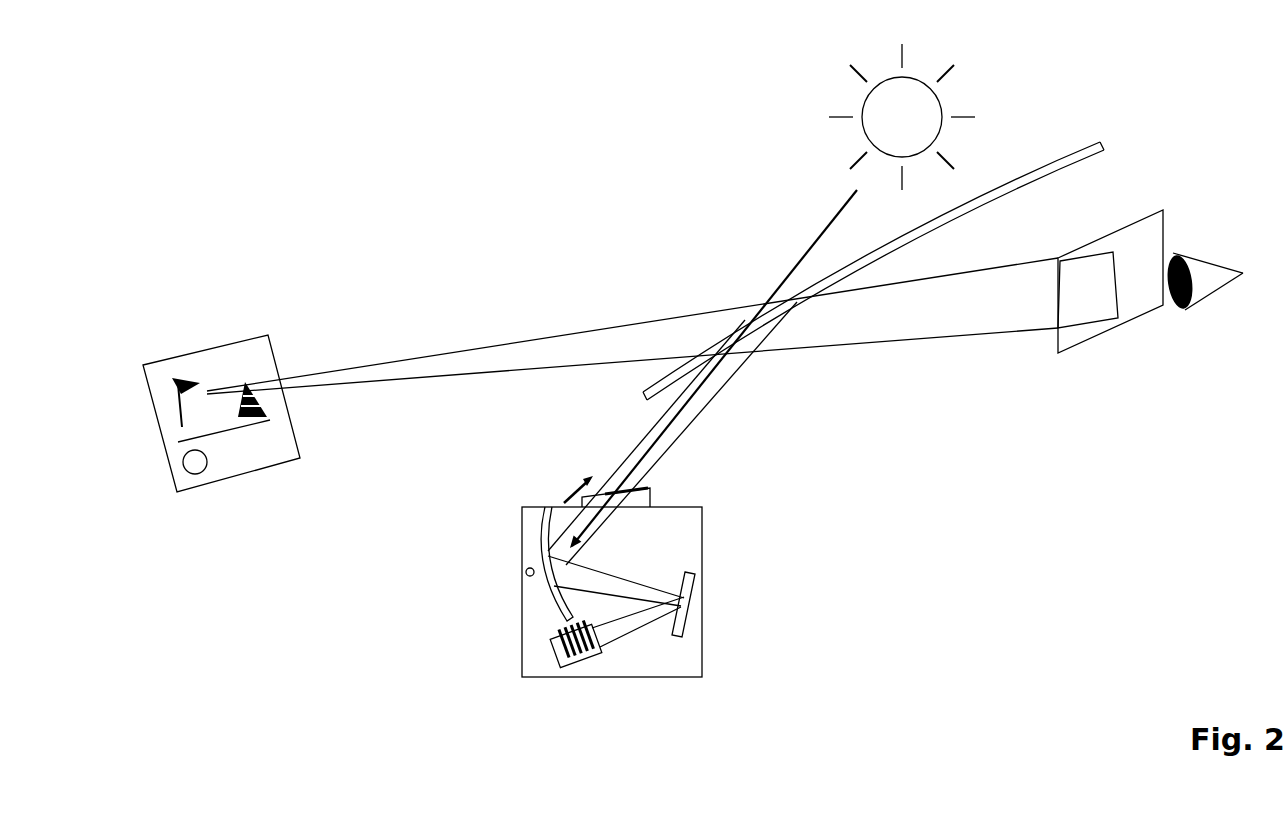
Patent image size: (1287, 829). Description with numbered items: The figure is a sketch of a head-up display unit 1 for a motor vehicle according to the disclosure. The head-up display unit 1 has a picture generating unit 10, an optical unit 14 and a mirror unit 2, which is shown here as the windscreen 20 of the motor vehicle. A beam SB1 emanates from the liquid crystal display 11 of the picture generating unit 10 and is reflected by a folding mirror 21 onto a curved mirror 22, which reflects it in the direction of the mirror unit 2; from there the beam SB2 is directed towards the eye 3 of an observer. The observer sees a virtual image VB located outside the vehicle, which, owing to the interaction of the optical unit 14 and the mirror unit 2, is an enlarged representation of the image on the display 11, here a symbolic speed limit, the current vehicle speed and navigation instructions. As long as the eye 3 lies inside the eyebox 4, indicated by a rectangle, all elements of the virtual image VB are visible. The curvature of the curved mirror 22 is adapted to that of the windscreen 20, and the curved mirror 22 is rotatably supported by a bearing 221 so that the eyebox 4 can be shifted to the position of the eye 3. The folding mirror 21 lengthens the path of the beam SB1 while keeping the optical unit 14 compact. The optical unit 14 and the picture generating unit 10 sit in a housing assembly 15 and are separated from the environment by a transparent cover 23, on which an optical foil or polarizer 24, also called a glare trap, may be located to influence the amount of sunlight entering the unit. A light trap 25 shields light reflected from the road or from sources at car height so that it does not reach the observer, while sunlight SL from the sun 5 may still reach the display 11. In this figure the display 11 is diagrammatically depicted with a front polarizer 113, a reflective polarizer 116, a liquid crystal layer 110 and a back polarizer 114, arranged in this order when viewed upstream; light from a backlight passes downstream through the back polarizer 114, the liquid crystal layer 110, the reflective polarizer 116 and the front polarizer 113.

The head-up display unit 1 is at (583, 630).
The mirror unit 2 is at (873, 271).
The windscreen 20 is at (857, 263).
The eye 3 is at (1207, 262).
The eyebox 4 is at (1073, 345).
The sun 5 is at (863, 102).
The picture generating unit 10 is at (558, 695).
The liquid crystal display 11 is at (560, 722).
The liquid crystal layer 110 is at (587, 668).
The front polarizer 113 is at (592, 660).
The back polarizer 114 is at (567, 675).
The reflective polarizer 116 is at (588, 665).
The optical unit 14 is at (650, 566).
The housing assembly 15 is at (703, 670).
The folding mirror 21 is at (703, 592).
The curved mirror 22 is at (543, 523).
The bearing 221 is at (525, 570).
The transparent cover 23 is at (652, 492).
The polarizer 24 is at (637, 481).
The light trap 25 is at (577, 492).
The sunlight SL is at (780, 283).
The beam SB1 is at (640, 632).
The beam SB2 is at (927, 320).
The virtual image VB is at (162, 445).